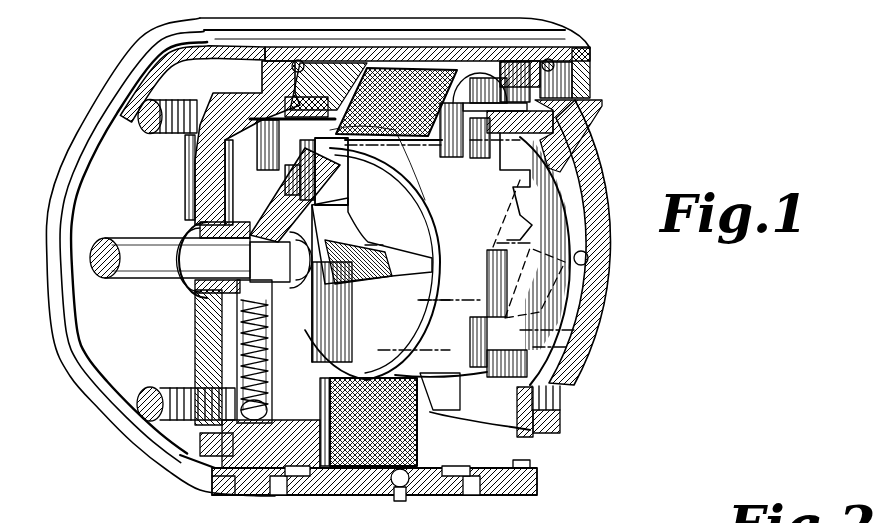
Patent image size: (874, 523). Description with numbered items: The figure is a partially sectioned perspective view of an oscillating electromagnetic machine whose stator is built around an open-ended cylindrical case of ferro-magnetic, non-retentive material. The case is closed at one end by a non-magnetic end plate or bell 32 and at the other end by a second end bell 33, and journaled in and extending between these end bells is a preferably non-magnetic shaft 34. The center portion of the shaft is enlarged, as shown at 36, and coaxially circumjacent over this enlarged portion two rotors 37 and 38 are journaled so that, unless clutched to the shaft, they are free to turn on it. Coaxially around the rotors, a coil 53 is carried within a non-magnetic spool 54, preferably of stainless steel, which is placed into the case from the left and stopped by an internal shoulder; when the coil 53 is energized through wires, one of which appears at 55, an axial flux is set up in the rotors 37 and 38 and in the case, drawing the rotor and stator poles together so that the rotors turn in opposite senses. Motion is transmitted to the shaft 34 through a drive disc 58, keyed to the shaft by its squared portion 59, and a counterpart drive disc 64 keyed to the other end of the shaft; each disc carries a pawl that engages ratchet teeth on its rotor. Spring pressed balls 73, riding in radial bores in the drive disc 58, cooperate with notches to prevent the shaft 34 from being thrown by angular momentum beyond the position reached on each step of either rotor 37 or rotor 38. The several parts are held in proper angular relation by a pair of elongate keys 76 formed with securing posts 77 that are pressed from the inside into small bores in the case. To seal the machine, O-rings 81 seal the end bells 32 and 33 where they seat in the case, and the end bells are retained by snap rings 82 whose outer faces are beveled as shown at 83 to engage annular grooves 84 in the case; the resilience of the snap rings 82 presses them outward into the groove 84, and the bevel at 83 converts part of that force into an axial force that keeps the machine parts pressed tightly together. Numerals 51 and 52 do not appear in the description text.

The end plate or bell 32 is at (105, 152).
The end plate or bell 33 is at (603, 110).
The shaft 34 is at (140, 263).
The enlarged center portion of the shaft 36 is at (292, 290).
The rotor 37 is at (377, 253).
The rotor 38 is at (486, 285).
The top plate 51 is at (358, 50).
The retaining ring 52 is at (588, 60).
The coil 53 is at (447, 70).
The spool 54 is at (298, 113).
The wire 55 is at (393, 500).
The drive member or disc 58 is at (242, 143).
The squared portion of the shaft 59 is at (268, 242).
The drive disc 64 is at (585, 232).
The spring pressed balls 73 is at (248, 398).
The elongate keys 76 is at (287, 474).
The securing posts 77 is at (270, 493).
The O-rings 81 is at (300, 62).
The snap rings 82 is at (217, 47).
The bevel 83 is at (213, 470).
The annular grooves 84 is at (222, 490).